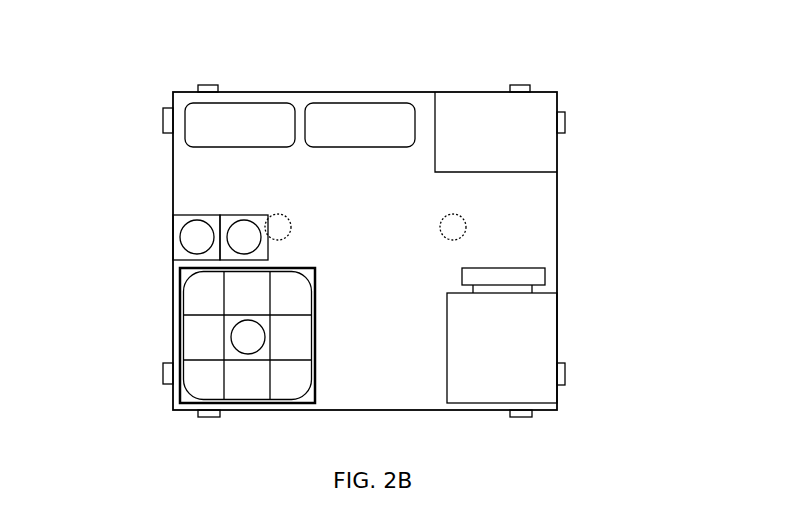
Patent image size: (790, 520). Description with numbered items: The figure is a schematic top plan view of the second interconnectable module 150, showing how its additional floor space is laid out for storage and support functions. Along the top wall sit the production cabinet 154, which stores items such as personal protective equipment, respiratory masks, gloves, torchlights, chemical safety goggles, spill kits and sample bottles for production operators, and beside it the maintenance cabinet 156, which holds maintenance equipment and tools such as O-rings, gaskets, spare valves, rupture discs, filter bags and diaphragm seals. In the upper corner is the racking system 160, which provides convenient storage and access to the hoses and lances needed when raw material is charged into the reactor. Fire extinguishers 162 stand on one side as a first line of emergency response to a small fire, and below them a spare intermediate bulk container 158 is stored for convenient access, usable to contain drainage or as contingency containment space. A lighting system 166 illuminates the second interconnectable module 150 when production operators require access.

The second interconnectable module 150 is at (605, 180).
The production cabinet 154 is at (240, 118).
The maintenance cabinet 156 is at (345, 118).
The racking system 160 is at (463, 108).
The fire extinguisher 162 is at (193, 237).
The spare intermediate bulk container 158 is at (180, 338).
The lighting system 166 is at (460, 225).